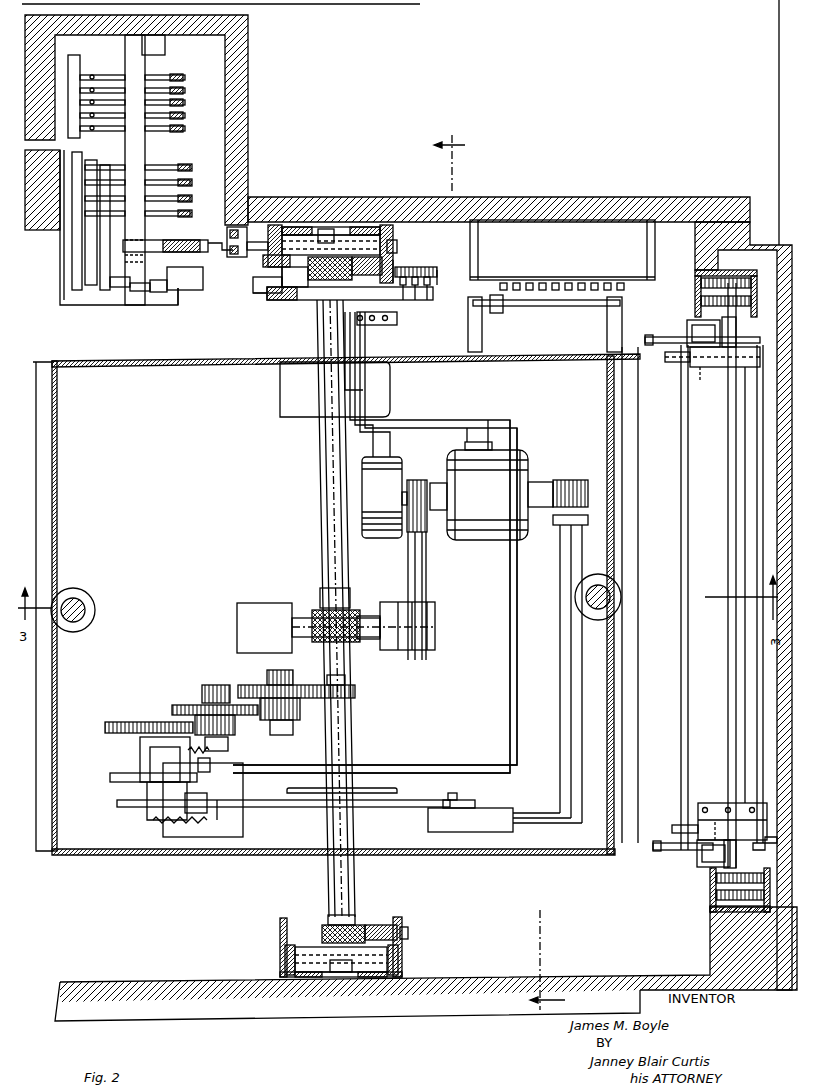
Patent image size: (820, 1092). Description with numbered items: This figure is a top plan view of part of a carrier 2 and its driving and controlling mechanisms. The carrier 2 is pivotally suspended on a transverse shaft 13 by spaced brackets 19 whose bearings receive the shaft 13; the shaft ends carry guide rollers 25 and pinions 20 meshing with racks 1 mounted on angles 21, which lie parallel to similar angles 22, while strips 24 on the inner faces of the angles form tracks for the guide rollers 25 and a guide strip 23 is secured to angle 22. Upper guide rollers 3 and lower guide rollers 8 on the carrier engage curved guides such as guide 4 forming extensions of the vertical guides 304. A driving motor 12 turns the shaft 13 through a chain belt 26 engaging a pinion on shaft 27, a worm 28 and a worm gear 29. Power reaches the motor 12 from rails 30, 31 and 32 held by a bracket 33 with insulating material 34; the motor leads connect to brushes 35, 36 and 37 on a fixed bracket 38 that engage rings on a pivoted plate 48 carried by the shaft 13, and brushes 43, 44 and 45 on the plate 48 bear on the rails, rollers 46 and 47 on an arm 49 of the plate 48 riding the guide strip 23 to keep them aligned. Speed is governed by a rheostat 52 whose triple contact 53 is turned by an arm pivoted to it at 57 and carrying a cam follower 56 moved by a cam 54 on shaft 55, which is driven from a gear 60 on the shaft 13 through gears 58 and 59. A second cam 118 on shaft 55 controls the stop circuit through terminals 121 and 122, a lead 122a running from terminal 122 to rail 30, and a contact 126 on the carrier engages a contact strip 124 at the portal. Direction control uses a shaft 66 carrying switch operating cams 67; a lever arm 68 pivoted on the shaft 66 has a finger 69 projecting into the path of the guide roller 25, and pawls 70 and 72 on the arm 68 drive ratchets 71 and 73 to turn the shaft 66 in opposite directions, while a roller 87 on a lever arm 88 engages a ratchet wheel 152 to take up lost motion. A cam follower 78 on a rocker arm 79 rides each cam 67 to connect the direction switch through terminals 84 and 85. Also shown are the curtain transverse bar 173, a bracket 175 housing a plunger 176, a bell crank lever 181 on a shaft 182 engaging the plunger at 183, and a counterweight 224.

The racks 1 is at (372, 926).
The carrier 2 is at (92, 360).
The upper guide rollers 3 is at (755, 270).
The curved guide 4 is at (505, 572).
The lower guide rollers 8 is at (734, 305).
The driving motor 12 is at (490, 540).
The shaft 13 is at (350, 745).
The spaced brackets 19 is at (282, 404).
The pinions 20 is at (318, 280).
The angles 21 is at (392, 245).
The angles 22 is at (268, 256).
The guide strip 23 is at (282, 275).
The strips 24 is at (280, 228).
The guide rollers 25 is at (332, 235).
The chain belt 26 is at (426, 561).
The shaft 27 is at (300, 603).
The worm 28 is at (360, 610).
The worm gear 29 is at (374, 642).
The conductor rail 30 is at (410, 262).
The conductor rail 31 is at (416, 276).
The conductor rail 32 is at (437, 278).
The bracket 33 is at (396, 262).
The insulating material 34 is at (432, 272).
The brush 35 is at (362, 325).
The brush 36 is at (374, 325).
The brush 37 is at (387, 325).
The fixed bracket 38 is at (335, 389).
The brush 43 is at (406, 300).
The brush 44 is at (417, 300).
The brush 45 is at (430, 300).
The roller 46 is at (258, 290).
The roller 47 is at (285, 283).
The pivoted plate 48 is at (275, 300).
The arm 49 is at (265, 302).
The rheostat 52 is at (505, 820).
The triple contact 53 is at (475, 804).
The cam 54 is at (125, 808).
The shaft 55 is at (140, 746).
The cam follower 56 is at (217, 822).
The pivotal connection 57 is at (455, 790).
The gear 58 is at (123, 722).
The gear 59 is at (297, 722).
The gear 60 is at (355, 692).
The shaft 66 is at (162, 52).
The switch operating cams 67 is at (185, 82).
The lever arm 68 is at (228, 236).
The finger 69 is at (268, 230).
The pawl 70 is at (185, 290).
The ratchet 71 is at (152, 292).
The pawl 72 is at (205, 240).
The ratchet 73 is at (172, 240).
The cam follower 78 is at (160, 167).
The rocker arm 79 is at (118, 165).
The terminal 84 is at (78, 275).
The terminal 85 is at (108, 252).
The roller 87 is at (138, 291).
The lever arm 88 is at (115, 288).
The cam 118 is at (110, 777).
The terminal 121 is at (210, 770).
The terminal 122 is at (208, 798).
The lead 122a is at (510, 712).
The contact strip 124 is at (525, 284).
The contact 126 is at (500, 310).
The ratchet wheel 152 is at (181, 306).
The transverse bar 173 is at (757, 478).
The bracket 175 is at (700, 367).
The plunger 176 is at (718, 812).
The bell crank lever 181 is at (652, 338).
The shaft 182 is at (681, 525).
The engagement point 183 is at (668, 360).
The weight 224 is at (702, 335).
The vertical guides 304 is at (700, 285).